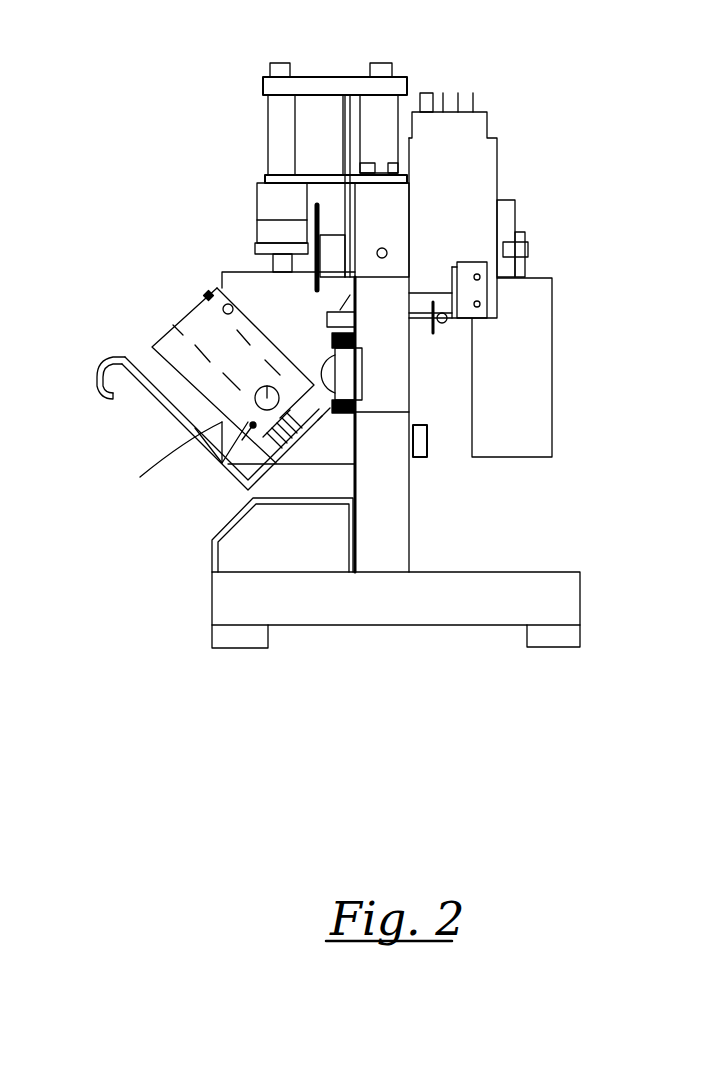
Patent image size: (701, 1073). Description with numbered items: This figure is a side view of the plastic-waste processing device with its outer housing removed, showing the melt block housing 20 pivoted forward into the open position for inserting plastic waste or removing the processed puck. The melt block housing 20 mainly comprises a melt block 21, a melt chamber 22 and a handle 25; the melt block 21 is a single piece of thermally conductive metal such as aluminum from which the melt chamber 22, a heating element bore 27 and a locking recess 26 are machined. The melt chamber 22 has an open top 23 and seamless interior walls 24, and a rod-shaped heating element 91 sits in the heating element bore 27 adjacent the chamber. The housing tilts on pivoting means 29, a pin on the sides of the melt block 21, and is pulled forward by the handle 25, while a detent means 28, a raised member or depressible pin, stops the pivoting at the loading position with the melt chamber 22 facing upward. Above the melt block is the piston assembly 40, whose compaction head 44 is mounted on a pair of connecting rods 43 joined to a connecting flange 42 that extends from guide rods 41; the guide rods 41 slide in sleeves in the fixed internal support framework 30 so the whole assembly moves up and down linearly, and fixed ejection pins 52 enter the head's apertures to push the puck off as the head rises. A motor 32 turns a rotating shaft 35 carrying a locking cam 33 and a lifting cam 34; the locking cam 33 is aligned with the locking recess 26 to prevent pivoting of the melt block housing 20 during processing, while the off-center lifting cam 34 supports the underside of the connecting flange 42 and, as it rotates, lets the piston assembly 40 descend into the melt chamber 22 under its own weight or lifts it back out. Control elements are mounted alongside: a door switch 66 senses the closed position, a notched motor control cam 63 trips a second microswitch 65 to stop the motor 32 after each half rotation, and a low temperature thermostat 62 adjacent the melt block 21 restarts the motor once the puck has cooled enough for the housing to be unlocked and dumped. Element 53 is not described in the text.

The melt block housing 20 is at (193, 502).
The melt block 21 is at (188, 382).
The melt chamber 22 is at (205, 343).
The open top 23 is at (171, 304).
The interior wall 24 is at (205, 438).
The handle 25 is at (112, 375).
The locking recess 26 is at (208, 293).
The heating element bore 27 is at (292, 440).
The detent means 28 is at (233, 307).
The pivoting means 29 is at (222, 467).
The fixed internal support framework 30 is at (387, 528).
The motor 32 is at (513, 362).
The locking cam 33 is at (323, 213).
The lifting cam 34 is at (343, 120).
The rotating shaft 35 is at (333, 250).
The piston assembly 40 is at (250, 90).
The guide rods 41 is at (383, 128).
The connecting flange 42 is at (327, 77).
The connecting rods 43 is at (282, 163).
The compaction head 44 is at (275, 203).
The ejection pins 52 is at (280, 263).
The piston 53 is at (323, 175).
The low temperature thermostat 62 is at (347, 373).
The motor control cam 63 is at (508, 252).
The second microswitch 65 is at (508, 213).
The door switch 66 is at (355, 293).
The heating element 91 is at (270, 386).